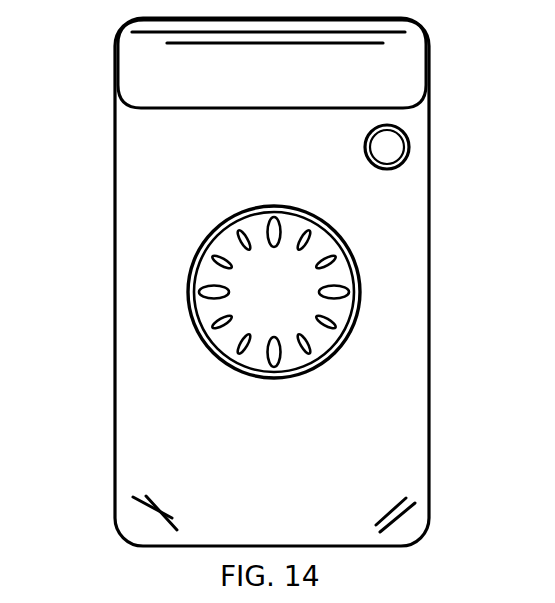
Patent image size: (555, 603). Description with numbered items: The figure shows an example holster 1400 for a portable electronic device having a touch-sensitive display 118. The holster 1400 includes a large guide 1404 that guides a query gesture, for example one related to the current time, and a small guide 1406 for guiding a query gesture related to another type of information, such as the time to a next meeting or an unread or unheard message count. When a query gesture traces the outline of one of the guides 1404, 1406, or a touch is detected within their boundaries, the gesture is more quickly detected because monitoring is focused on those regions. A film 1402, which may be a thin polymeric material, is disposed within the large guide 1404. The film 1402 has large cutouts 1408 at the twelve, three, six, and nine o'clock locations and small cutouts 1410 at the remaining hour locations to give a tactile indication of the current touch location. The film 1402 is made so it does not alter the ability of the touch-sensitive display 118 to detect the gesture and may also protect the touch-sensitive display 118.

The holster 1400 is at (117, 532).
The film 1402 is at (204, 268).
The large guide 1404 is at (363, 288).
The small guide 1406 is at (410, 155).
The touch-sensitive display 118 is at (388, 146).
The large cutouts 1408 is at (201, 292).
The small cutouts 1410 is at (226, 317).